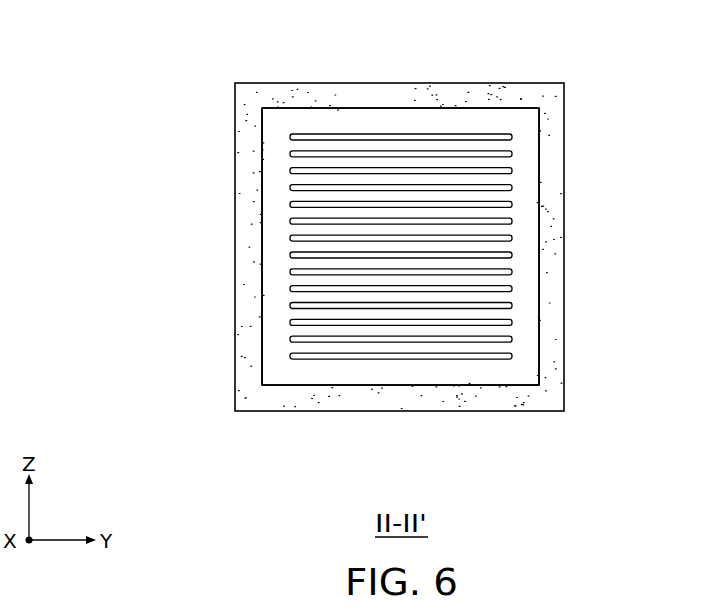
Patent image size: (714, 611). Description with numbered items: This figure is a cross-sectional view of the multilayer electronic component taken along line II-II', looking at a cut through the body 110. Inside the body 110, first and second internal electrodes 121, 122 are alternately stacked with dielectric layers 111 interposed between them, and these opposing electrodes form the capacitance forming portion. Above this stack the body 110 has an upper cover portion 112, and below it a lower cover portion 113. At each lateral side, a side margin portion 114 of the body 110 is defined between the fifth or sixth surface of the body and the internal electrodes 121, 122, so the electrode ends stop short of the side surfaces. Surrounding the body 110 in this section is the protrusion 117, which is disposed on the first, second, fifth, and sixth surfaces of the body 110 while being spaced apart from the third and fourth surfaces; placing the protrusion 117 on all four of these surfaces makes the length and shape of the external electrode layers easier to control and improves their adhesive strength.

The body 110 is at (540, 237).
The dielectric layer 111 is at (475, 242).
The upper cover portion 112 is at (362, 120).
The lower cover portion 113 is at (360, 370).
The side margin portion 114 is at (277, 302).
The protrusion 117 is at (425, 95).
The first internal electrode 121 is at (505, 138).
The second internal electrode 122 is at (506, 157).